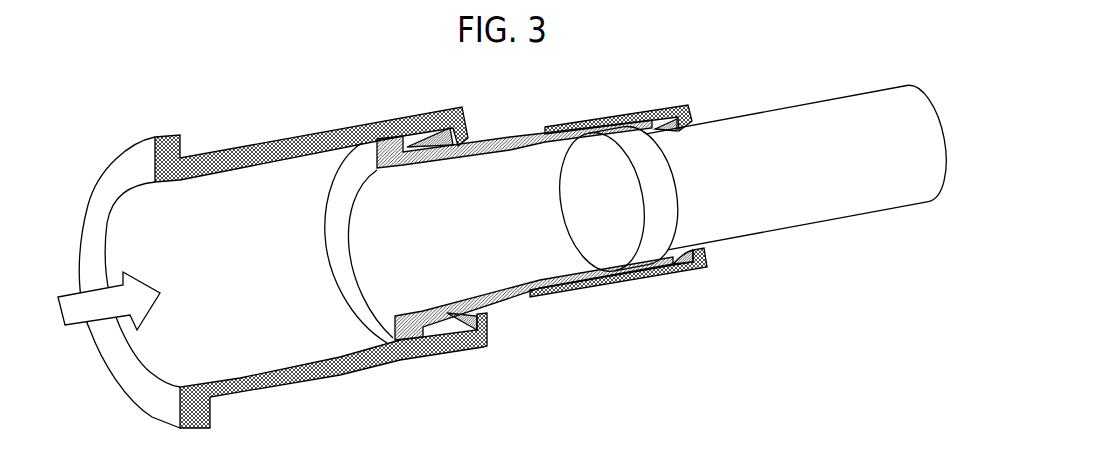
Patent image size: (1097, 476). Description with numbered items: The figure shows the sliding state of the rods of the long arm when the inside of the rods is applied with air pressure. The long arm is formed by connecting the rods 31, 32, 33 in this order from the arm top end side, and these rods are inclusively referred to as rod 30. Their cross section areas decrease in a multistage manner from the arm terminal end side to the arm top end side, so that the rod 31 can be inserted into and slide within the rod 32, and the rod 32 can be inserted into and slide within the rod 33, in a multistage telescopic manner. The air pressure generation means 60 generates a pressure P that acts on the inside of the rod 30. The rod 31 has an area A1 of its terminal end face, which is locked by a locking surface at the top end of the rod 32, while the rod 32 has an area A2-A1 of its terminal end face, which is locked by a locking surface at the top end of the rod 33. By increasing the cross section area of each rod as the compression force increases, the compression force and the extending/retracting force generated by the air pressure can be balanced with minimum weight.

The rod 30 is at (412, 280).
The rod 31 is at (741, 238).
The rod 32 is at (543, 299).
The rod 33 is at (357, 371).
The air pressure generation means 60 is at (68, 327).
The area of terminal end face of rod 31 A1 is at (596, 198).
The area of terminal end face of rod 32 A2-A1 is at (329, 245).